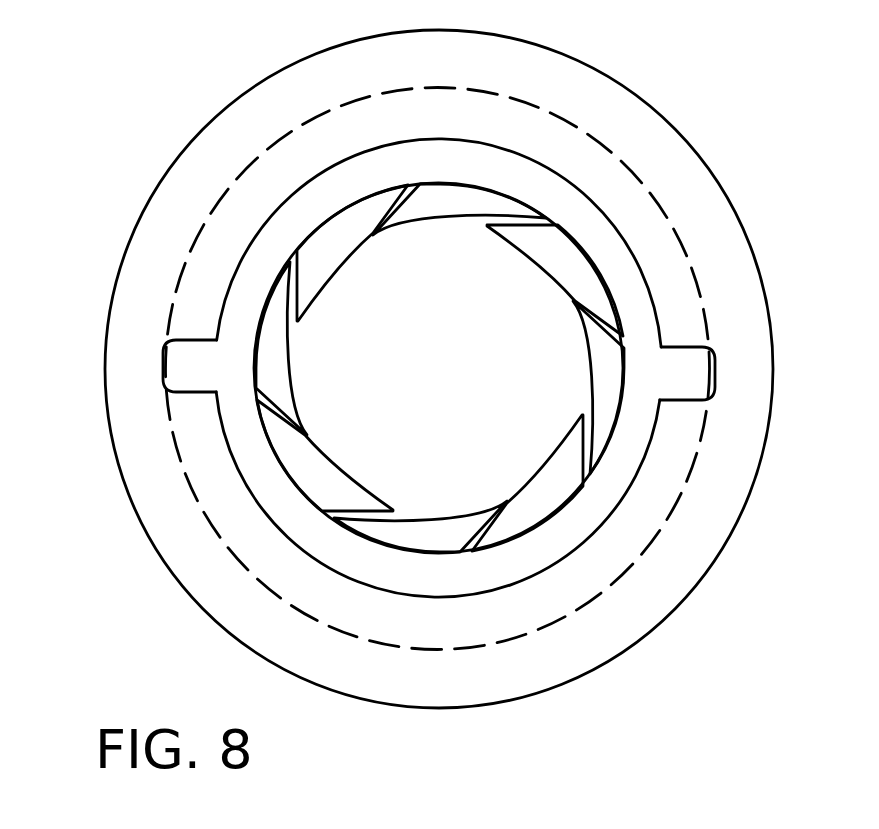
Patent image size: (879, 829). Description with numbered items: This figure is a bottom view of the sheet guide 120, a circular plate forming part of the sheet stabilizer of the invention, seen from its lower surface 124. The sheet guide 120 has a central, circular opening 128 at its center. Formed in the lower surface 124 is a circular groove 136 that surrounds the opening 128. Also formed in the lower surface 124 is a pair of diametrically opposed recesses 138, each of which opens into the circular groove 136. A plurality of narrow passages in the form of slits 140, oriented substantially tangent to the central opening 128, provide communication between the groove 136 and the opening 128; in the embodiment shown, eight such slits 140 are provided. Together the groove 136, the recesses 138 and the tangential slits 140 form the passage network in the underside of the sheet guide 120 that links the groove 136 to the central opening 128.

The sheet guide 120 is at (618, 115).
The lower surface 124 is at (645, 222).
The central circular opening 128 is at (535, 260).
The circular groove 136 is at (622, 453).
The recesses 138 is at (172, 362).
The slits 140 is at (292, 294).